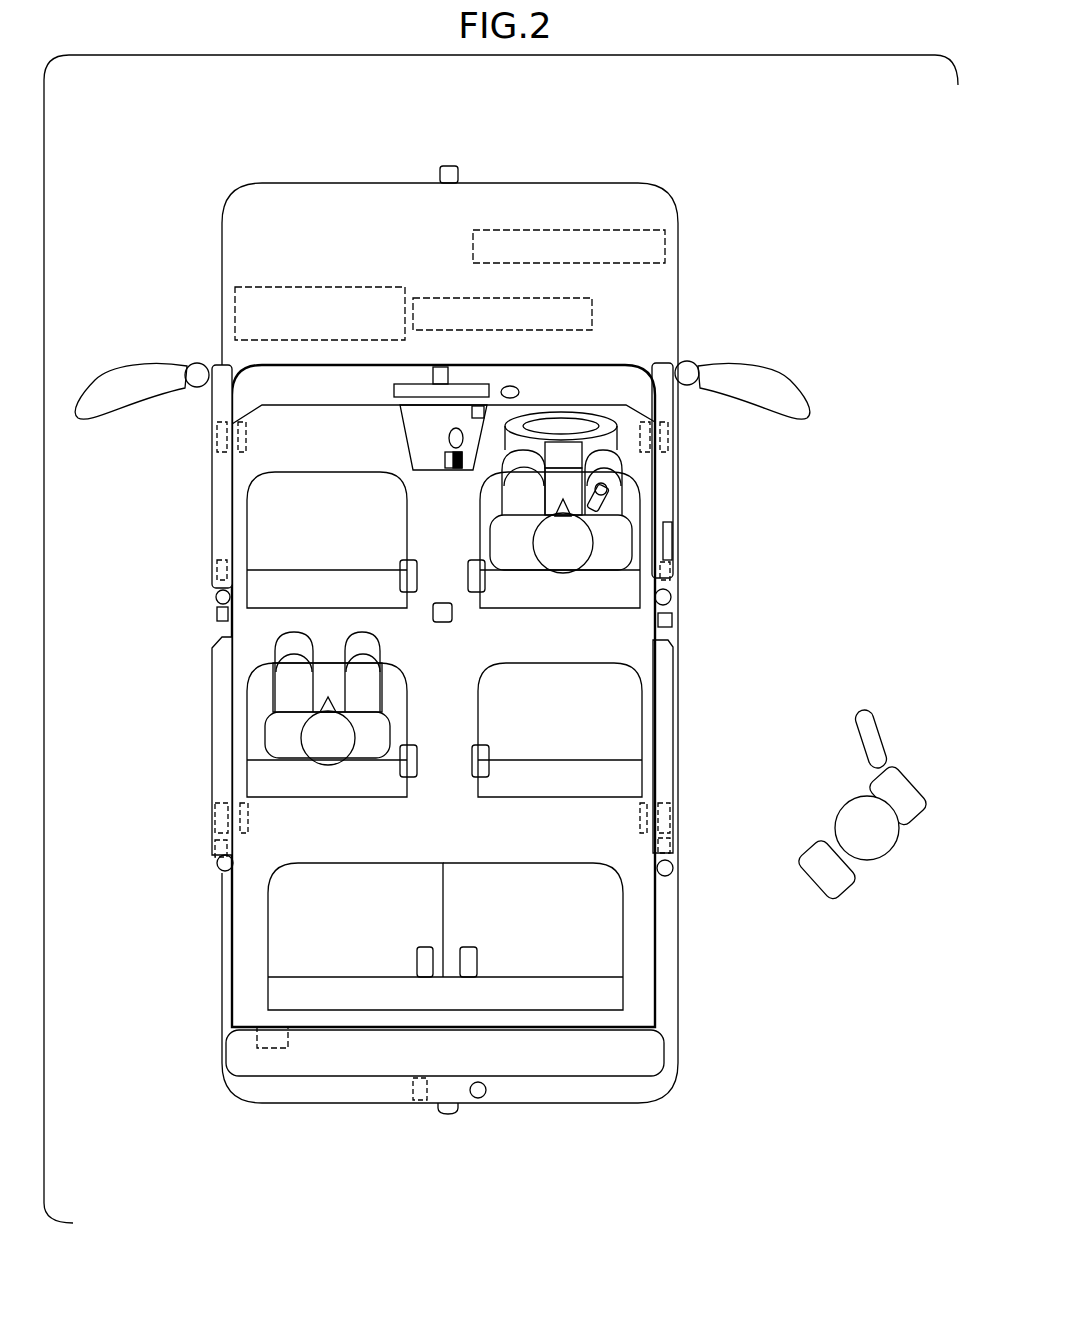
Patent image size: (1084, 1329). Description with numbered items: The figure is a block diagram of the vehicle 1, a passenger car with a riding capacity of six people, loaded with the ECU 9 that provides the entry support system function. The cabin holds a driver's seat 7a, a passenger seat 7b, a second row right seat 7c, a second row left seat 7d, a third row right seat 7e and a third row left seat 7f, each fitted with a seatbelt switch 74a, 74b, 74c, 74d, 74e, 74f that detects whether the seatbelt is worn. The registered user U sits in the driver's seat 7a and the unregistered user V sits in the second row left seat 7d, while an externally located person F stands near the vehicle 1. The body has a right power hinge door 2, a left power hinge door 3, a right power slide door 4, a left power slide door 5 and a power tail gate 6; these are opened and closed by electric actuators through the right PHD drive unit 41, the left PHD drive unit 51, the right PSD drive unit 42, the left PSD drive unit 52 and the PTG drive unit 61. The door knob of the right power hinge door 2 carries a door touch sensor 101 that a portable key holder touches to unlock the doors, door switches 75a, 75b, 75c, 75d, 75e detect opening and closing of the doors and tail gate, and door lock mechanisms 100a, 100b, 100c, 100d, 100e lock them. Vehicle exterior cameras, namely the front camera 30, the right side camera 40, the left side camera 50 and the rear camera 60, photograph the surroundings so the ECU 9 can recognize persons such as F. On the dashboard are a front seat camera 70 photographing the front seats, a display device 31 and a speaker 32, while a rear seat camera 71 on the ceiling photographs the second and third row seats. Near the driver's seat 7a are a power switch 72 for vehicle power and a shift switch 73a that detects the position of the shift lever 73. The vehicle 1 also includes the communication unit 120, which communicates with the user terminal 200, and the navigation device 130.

The vehicle 1 is at (554, 183).
The right power hinge door 2 is at (676, 505).
The left power hinge door 3 is at (213, 506).
The right power slide door 4 is at (680, 748).
The left power slide door 5 is at (213, 736).
The power tail gate 6 is at (618, 1077).
The ECU 9 is at (235, 307).
The front camera 30 is at (448, 166).
The display device 31 is at (394, 389).
The speaker 32 is at (519, 392).
The right side camera 40 is at (680, 625).
The right PHD drive unit 41 is at (672, 438).
The right PSD drive unit 42 is at (672, 820).
The left side camera 50 is at (217, 616).
The left PHD drive unit 51 is at (217, 438).
The left PSD drive unit 52 is at (216, 823).
The rear camera 60 is at (448, 1115).
The PTG drive unit 61 is at (271, 1050).
The front seat camera 70 is at (447, 370).
The rear seat camera 71 is at (443, 623).
The power switch 72 is at (470, 409).
The shift lever 73 is at (449, 442).
The shift switch 73a is at (449, 468).
The seatbelt switch 74a is at (476, 595).
The seatbelt switch 74b is at (410, 595).
The seatbelt switch 74c is at (480, 780).
The seatbelt switch 74d is at (412, 780).
The seatbelt switch 74e is at (478, 966).
The seatbelt switch 74f is at (425, 947).
The door switch 75a is at (672, 600).
The door switch 75b is at (216, 598).
The door switch 75c is at (673, 870).
The door switch 75d is at (221, 871).
The door switch 75e is at (481, 1098).
The driver's seat 7a is at (480, 540).
The passenger seat 7b is at (410, 515).
The second row right seat 7c is at (478, 722).
The second row left seat 7d is at (406, 682).
The third row right seat 7e is at (520, 863).
The third row left seat 7f is at (378, 863).
The door lock mechanism 100a is at (672, 572).
The door lock mechanism 100b is at (218, 575).
The door lock mechanism 100c is at (672, 848).
The door lock mechanism 100d is at (216, 850).
The door lock mechanism 100e is at (419, 1101).
The door touch sensor 101 is at (678, 540).
The communication unit 120 is at (567, 231).
The navigation device 130 is at (436, 298).
The user terminal 200 is at (608, 488).
The registered user U is at (565, 575).
The unregistered user V is at (320, 772).
The externally located person F is at (880, 862).